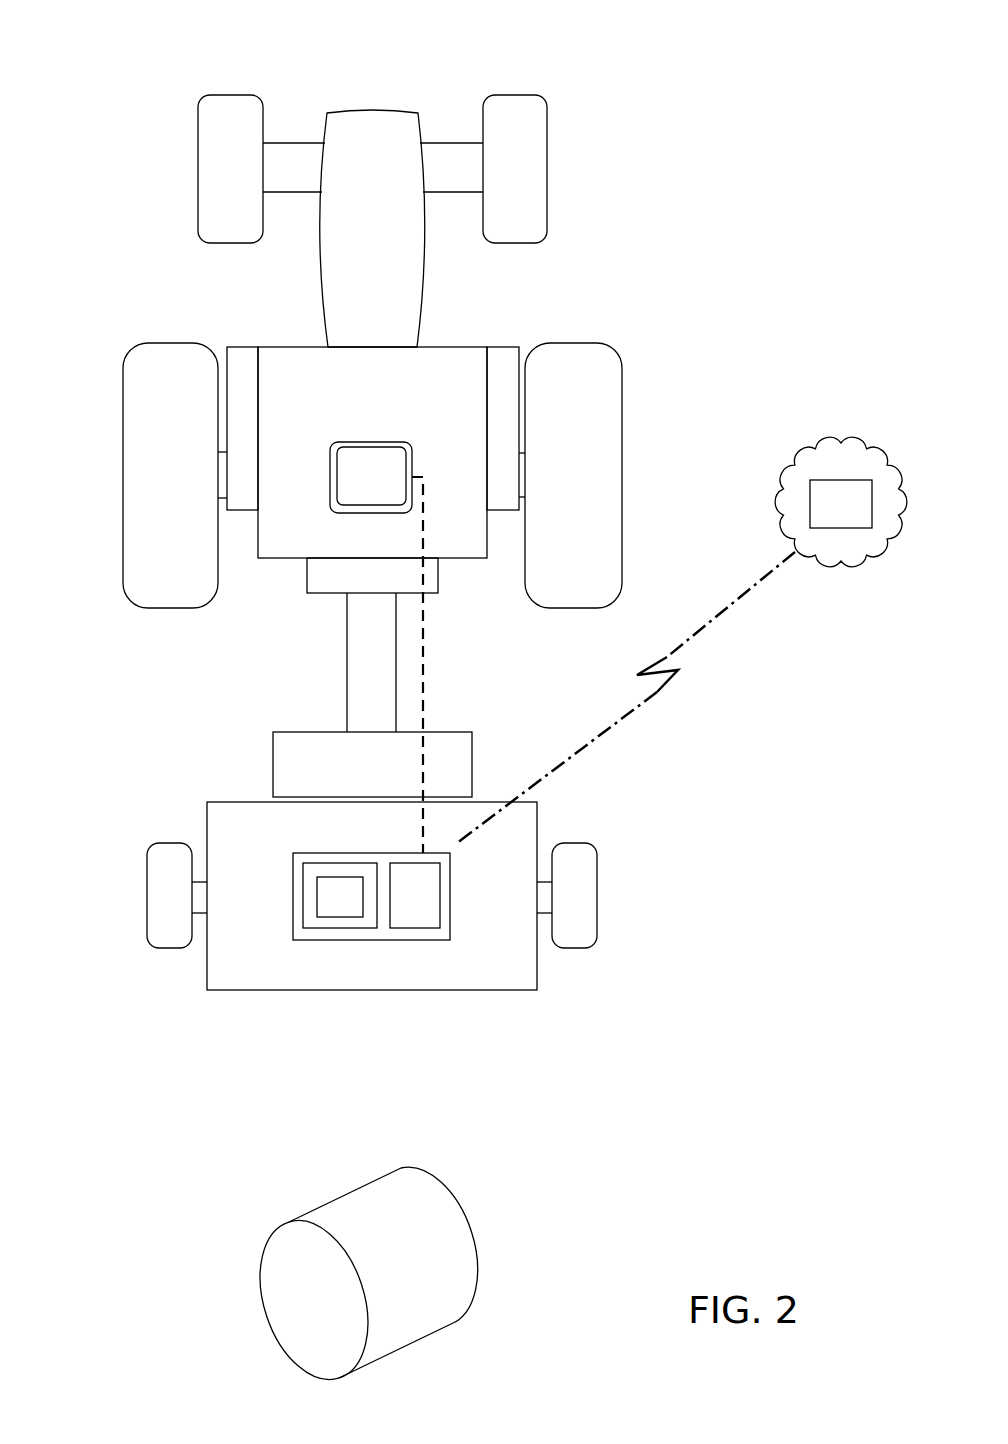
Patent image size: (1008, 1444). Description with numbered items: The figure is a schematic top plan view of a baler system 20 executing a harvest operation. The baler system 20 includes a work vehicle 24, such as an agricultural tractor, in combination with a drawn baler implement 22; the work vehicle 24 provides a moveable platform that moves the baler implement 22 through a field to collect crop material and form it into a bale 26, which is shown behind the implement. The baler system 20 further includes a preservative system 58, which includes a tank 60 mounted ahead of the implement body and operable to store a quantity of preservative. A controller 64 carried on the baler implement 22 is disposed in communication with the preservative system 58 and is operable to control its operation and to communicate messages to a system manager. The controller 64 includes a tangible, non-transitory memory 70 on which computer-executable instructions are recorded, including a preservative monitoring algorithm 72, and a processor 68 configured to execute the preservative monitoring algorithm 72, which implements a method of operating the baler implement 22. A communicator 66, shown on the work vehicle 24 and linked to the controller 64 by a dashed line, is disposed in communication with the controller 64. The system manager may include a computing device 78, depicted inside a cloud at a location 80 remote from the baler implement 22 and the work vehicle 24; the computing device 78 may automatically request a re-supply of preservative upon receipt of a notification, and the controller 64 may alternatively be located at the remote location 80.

The baler system 20 is at (140, 60).
The baler implement 22 is at (205, 980).
The work vehicle 24 is at (320, 282).
The bale 26 is at (327, 1198).
The preservative system 58 is at (262, 765).
The tank 60 is at (305, 732).
The controller 64 is at (397, 940).
The communicator 66 is at (356, 490).
The processor 68 is at (432, 925).
The memory 70 is at (358, 925).
The preservative monitoring algorithm 72 is at (327, 905).
The computing device 78 is at (826, 517).
The location 80 is at (832, 435).